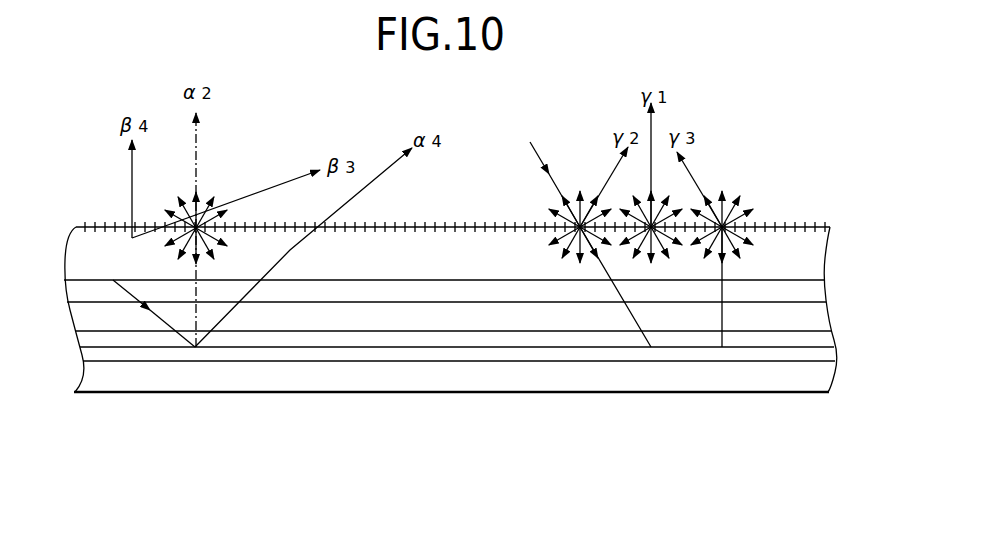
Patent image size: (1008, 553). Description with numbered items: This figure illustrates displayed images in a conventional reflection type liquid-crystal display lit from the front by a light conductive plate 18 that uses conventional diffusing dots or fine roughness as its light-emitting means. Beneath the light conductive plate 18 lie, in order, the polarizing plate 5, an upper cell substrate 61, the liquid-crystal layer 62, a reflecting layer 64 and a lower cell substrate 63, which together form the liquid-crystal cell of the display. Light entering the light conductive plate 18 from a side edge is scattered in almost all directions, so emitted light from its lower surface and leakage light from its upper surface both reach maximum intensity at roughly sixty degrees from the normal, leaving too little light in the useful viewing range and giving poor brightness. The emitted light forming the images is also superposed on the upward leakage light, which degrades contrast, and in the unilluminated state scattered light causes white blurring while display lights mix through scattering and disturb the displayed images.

The light conductive plate 18 is at (819, 263).
The polarizing plate 5 is at (823, 286).
The cell substrate 61 is at (828, 312).
The liquid-crystal layer 62 is at (833, 330).
The reflecting layer 64 is at (835, 353).
The cell substrate 63 is at (755, 373).